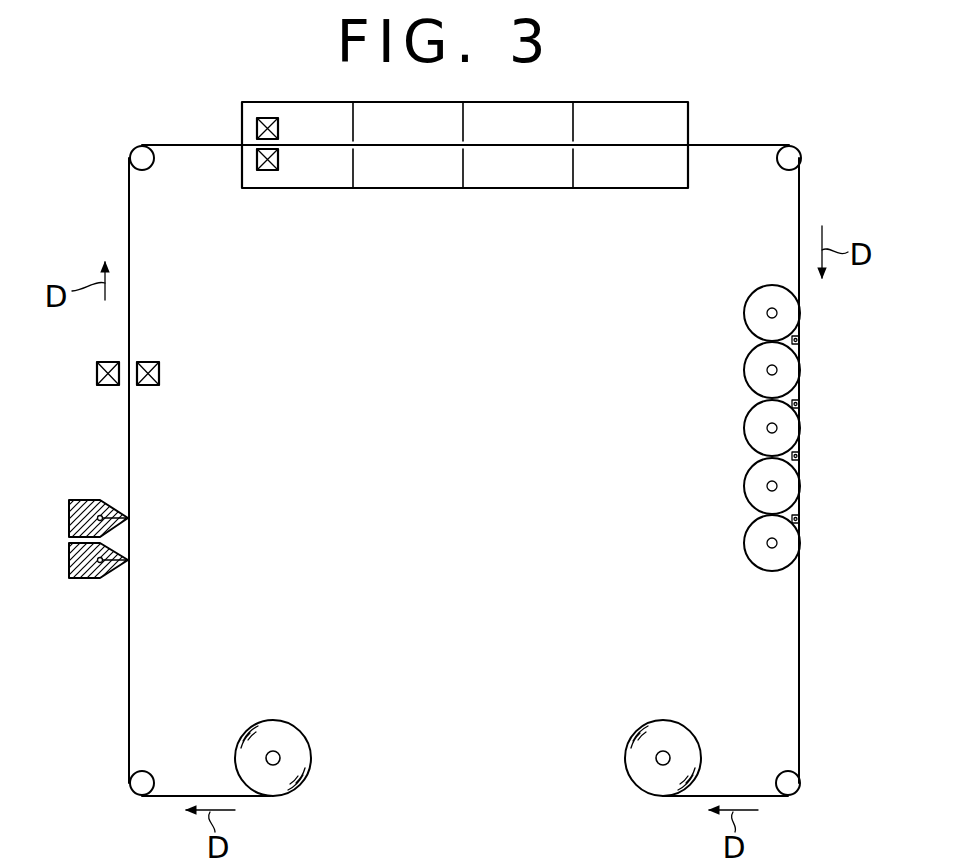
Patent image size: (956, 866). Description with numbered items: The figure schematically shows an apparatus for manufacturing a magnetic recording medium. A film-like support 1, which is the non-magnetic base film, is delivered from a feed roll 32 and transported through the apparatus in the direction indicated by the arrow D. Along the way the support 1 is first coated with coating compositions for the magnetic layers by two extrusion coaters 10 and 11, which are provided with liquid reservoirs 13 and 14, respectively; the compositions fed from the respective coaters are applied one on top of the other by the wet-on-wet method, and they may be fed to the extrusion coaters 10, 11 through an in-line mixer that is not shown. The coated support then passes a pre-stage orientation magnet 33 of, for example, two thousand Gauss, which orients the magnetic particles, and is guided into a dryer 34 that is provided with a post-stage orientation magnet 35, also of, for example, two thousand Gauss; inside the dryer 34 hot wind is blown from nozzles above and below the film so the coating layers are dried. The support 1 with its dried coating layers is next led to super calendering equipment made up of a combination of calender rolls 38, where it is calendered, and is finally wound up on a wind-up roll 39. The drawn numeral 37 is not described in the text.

The film-like support 1 is at (129, 657).
The extrusion coater 10 is at (69, 562).
The extrusion coater 11 is at (69, 520).
The liquid reservoir 13 is at (102, 574).
The liquid reservoir 14 is at (100, 515).
The feed roll 32 is at (280, 752).
The pre-stage orientation magnet 33 is at (161, 373).
The dryer 34 is at (421, 195).
The post-stage orientation magnet 35 is at (268, 172).
The roller 37 is at (736, 366).
The calender rolls 38 is at (757, 312).
The wind-up roll 39 is at (655, 752).